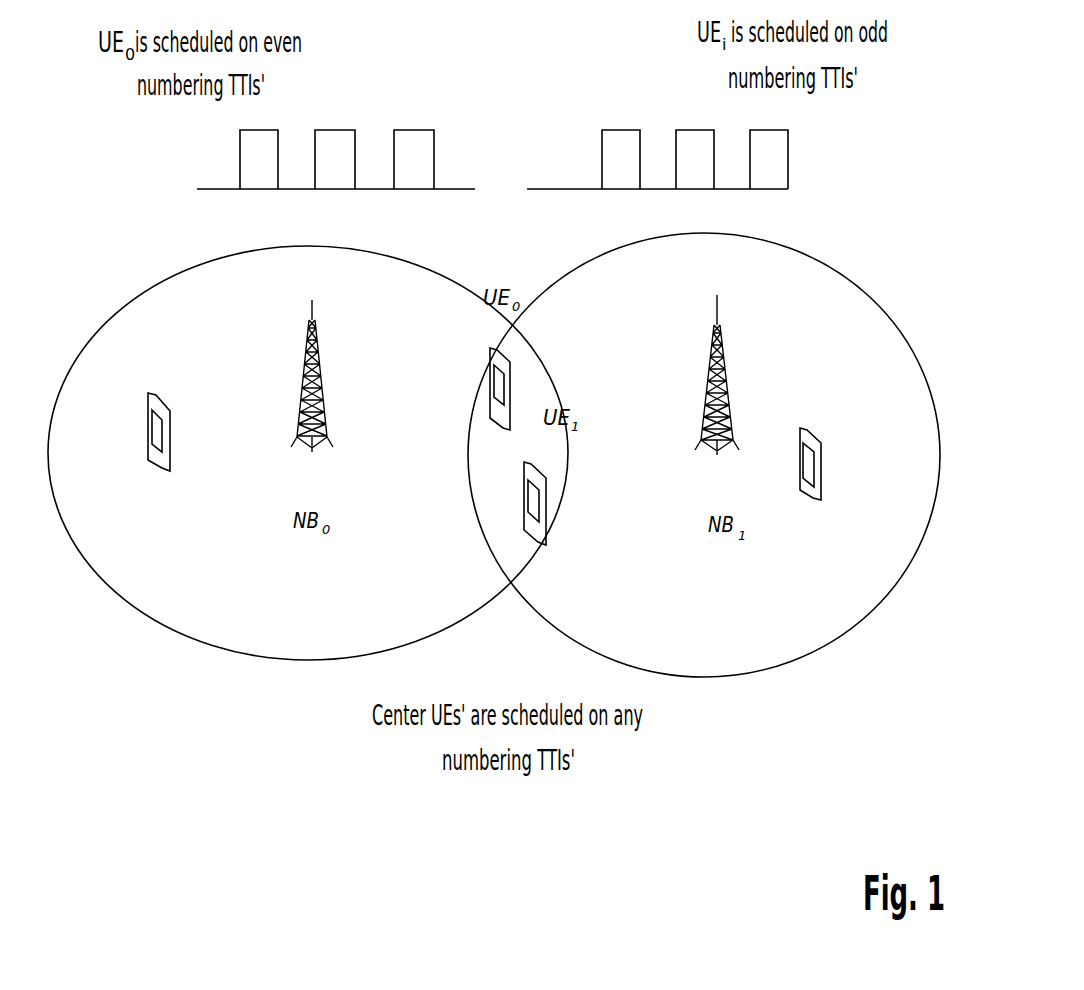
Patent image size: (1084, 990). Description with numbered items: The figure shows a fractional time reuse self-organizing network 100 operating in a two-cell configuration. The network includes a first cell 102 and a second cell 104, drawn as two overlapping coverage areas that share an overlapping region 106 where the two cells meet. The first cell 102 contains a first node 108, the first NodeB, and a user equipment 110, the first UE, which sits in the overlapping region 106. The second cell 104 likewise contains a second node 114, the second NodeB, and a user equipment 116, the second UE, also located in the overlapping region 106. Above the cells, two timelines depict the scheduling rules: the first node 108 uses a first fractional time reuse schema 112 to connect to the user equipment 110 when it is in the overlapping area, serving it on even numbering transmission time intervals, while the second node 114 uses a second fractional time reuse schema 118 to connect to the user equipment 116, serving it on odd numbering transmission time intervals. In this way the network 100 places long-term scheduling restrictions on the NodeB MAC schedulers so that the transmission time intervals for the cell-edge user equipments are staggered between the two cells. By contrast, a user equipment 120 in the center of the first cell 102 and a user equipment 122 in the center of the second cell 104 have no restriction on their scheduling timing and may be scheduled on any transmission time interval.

The fractional time reuse self-organizing network 100 is at (512, 247).
The first cell 102 is at (166, 262).
The second cell 104 is at (816, 227).
The overlapping region 106 is at (513, 503).
The first node 108 is at (323, 395).
The user equipment 110 is at (488, 405).
The first fractional time reuse schema 112 is at (372, 190).
The second node 114 is at (727, 385).
The user equipment 116 is at (537, 482).
The second fractional time reuse schema 118 is at (589, 190).
The user equipment 120 is at (159, 465).
The user equipment 122 is at (815, 440).